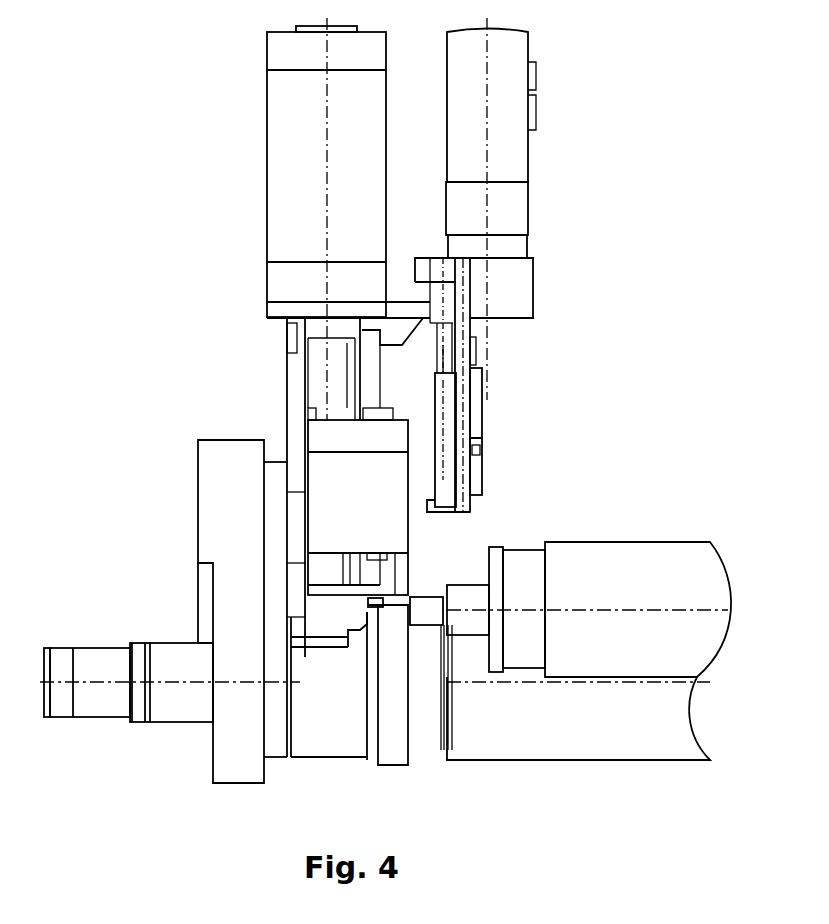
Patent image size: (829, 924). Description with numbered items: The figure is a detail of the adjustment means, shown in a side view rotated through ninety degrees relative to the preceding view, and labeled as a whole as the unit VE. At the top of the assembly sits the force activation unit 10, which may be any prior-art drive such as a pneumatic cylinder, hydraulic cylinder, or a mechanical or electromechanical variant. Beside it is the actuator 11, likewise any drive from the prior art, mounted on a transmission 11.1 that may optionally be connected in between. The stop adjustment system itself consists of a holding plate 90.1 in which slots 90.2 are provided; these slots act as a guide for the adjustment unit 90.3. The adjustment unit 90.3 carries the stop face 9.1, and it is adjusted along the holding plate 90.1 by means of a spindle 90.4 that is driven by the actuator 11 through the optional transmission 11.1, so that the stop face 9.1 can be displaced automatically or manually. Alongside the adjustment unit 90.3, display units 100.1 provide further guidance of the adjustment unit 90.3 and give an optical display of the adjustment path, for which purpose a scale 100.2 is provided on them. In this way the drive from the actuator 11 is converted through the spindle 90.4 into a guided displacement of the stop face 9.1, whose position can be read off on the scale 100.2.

The adjusting unit VE is at (392, 219).
The force activation unit 10 is at (217, 219).
The actuator 11 is at (581, 209).
The transmission 11.1 is at (575, 288).
The holding plate 90.1 is at (595, 383).
The slot 90.2 is at (603, 330).
The adjustment unit 90.3 is at (243, 411).
The spindle 90.4 is at (242, 323).
The display unit 100.1 is at (609, 395).
The scale 100.2 is at (609, 442).
The stop face 9.1 is at (257, 435).